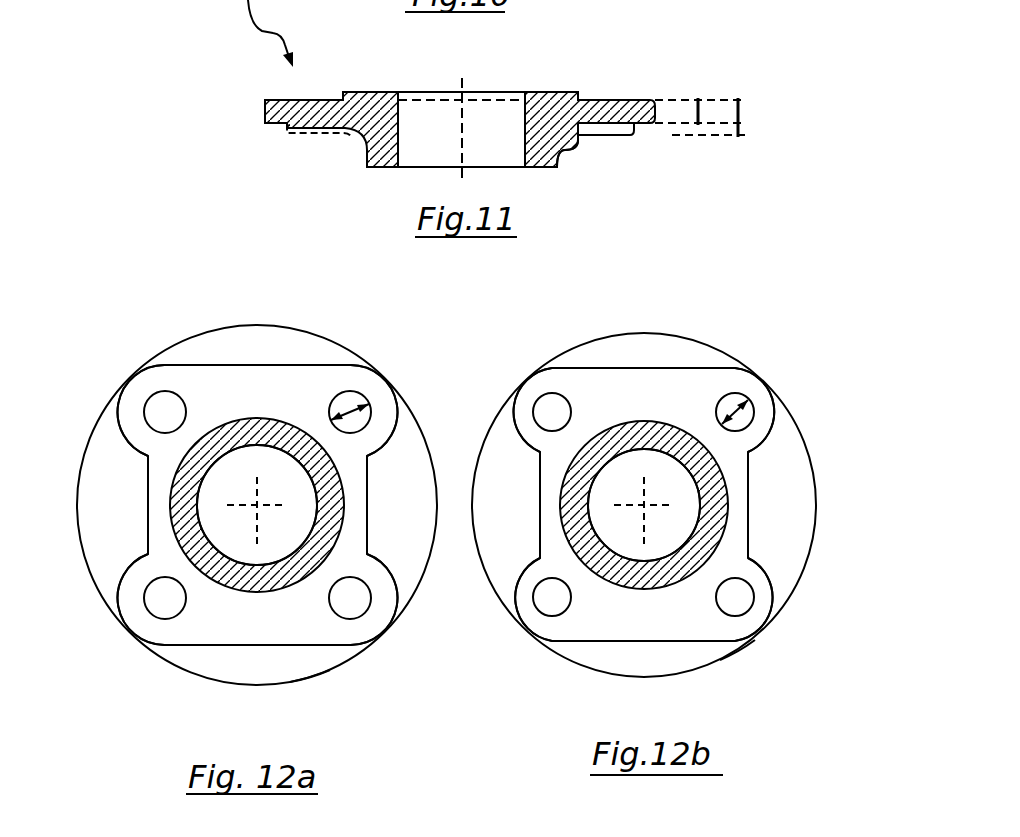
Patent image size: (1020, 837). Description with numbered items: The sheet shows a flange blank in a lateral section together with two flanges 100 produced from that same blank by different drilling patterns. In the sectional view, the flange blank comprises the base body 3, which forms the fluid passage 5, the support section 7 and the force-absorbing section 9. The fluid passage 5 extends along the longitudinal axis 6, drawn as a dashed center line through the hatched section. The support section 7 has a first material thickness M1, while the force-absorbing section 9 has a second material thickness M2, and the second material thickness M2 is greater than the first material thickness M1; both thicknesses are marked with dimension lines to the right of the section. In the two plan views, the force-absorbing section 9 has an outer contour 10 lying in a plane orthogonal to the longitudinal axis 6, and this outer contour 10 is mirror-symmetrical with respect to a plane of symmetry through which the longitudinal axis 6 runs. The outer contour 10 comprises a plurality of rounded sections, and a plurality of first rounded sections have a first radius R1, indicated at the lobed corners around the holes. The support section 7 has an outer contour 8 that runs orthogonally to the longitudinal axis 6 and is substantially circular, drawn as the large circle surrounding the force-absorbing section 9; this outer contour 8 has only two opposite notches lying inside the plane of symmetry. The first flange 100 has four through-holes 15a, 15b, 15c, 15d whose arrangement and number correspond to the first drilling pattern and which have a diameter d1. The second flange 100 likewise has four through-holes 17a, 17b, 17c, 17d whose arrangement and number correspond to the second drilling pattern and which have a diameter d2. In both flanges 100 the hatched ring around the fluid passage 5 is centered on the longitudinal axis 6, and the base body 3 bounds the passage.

In FIG. 11, the base body 3 is at (557, 150).
In FIG. 12A, the base body 3 is at (345, 663).
In FIG. 12B, the base body 3 is at (753, 642).
In FIG. 12A, the fluid passage 5 is at (235, 467).
In FIG. 12B, the fluid passage 5 is at (630, 463).
In FIG. 11, the longitudinal axis 6 is at (462, 80).
In FIG. 12A, the longitudinal axis 6 is at (275, 522).
In FIG. 12B, the longitudinal axis 6 is at (665, 524).
In FIG. 11, the support section 7 is at (614, 110).
In FIG. 12A, the support section 7 is at (405, 555).
In FIG. 12B, the support section 7 is at (798, 537).
In FIG. 11, the outer contour 8 is at (265, 104).
In FIG. 12A, the outer contour 8 is at (90, 440).
In FIG. 12B, the outer contour 8 is at (805, 446).
In FIG. 11, the force-absorbing section 9 is at (303, 127).
In FIG. 12A, the force-absorbing section 9 is at (200, 627).
In FIG. 12B, the force-absorbing section 9 is at (617, 620).
In FIG. 11, the outer contour 10 is at (266, 136).
In FIG. 12A, the outer contour 10 is at (134, 567).
In FIG. 12B, the outer contour 10 is at (748, 497).
In FIG. 12A, the flange 100 is at (141, 312).
In FIG. 12B, the flange 100 is at (796, 320).
In FIG. 11, the first material thickness M1 is at (700, 108).
In FIG. 11, the second material thickness M2 is at (745, 121).
In FIG. 12A, the first radius R1 is at (128, 378).
In FIG. 12B, the first radius R1 is at (535, 375).
In FIG. 12A, the diameter d1 is at (349, 402).
In FIG. 12B, the diameter d2 is at (750, 418).
In FIG. 12A, the through-hole 15a is at (165, 390).
In FIG. 12A, the through-hole 15b is at (145, 598).
In FIG. 12A, the through-hole 15c is at (365, 609).
In FIG. 12A, the through-hole 15d is at (347, 393).
In FIG. 12B, the through-hole 17a is at (552, 395).
In FIG. 12B, the through-hole 17b is at (535, 592).
In FIG. 12B, the through-hole 17c is at (753, 597).
In FIG. 12B, the through-hole 17d is at (748, 380).